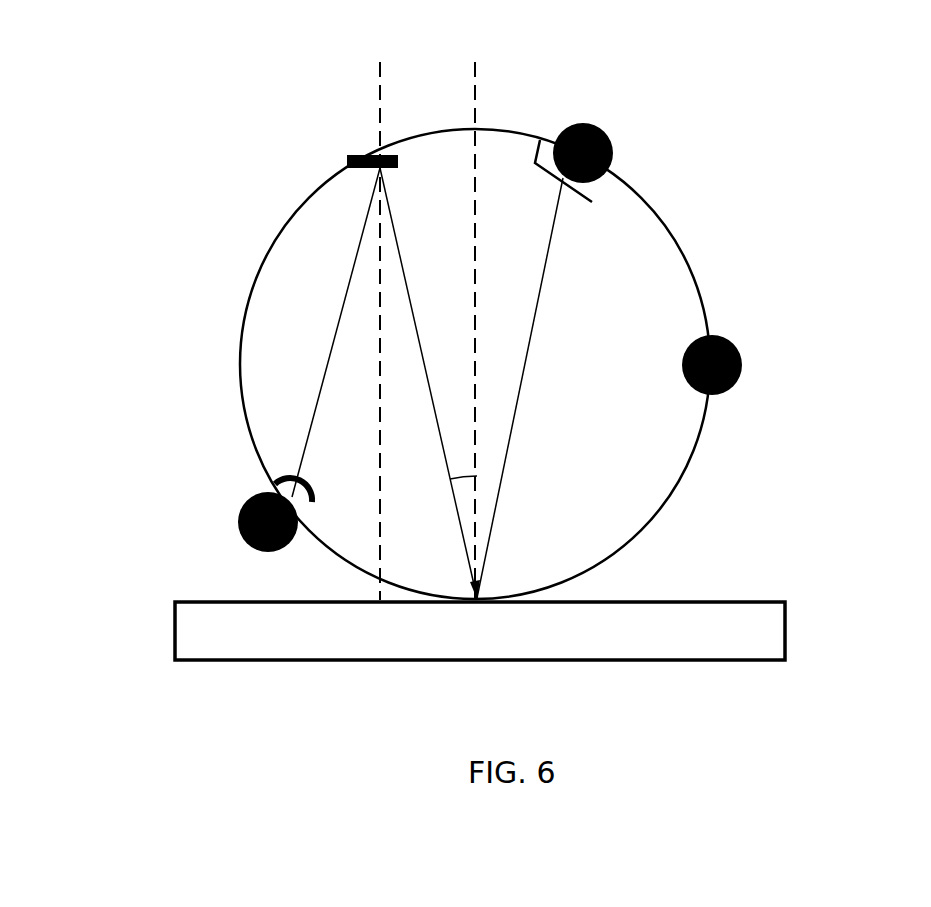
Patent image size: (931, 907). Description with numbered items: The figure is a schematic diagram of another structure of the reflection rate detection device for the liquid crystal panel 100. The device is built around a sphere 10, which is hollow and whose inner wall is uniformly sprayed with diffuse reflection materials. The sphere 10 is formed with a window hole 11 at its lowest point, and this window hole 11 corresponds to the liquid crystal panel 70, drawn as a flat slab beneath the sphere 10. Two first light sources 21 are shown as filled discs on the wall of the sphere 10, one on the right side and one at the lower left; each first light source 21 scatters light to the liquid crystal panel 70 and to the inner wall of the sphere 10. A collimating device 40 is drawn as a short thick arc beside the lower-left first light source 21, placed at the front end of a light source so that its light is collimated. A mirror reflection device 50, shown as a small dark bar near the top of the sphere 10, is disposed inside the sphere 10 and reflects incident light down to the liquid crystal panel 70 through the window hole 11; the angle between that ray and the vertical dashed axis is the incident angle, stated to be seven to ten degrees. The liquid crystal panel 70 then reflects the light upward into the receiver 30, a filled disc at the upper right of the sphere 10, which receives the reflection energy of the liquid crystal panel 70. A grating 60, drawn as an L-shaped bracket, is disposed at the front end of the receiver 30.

The reflection rate detection device for the liquid crystal panel 100 is at (180, 88).
The sphere 10 is at (697, 283).
The window hole 11 is at (481, 612).
The first light source 21 is at (727, 335).
The receiver 30 is at (592, 122).
The collimating device 40 is at (283, 477).
The mirror reflection device 50 is at (352, 154).
The grating 60 is at (540, 140).
The liquid crystal panel 70 is at (725, 620).